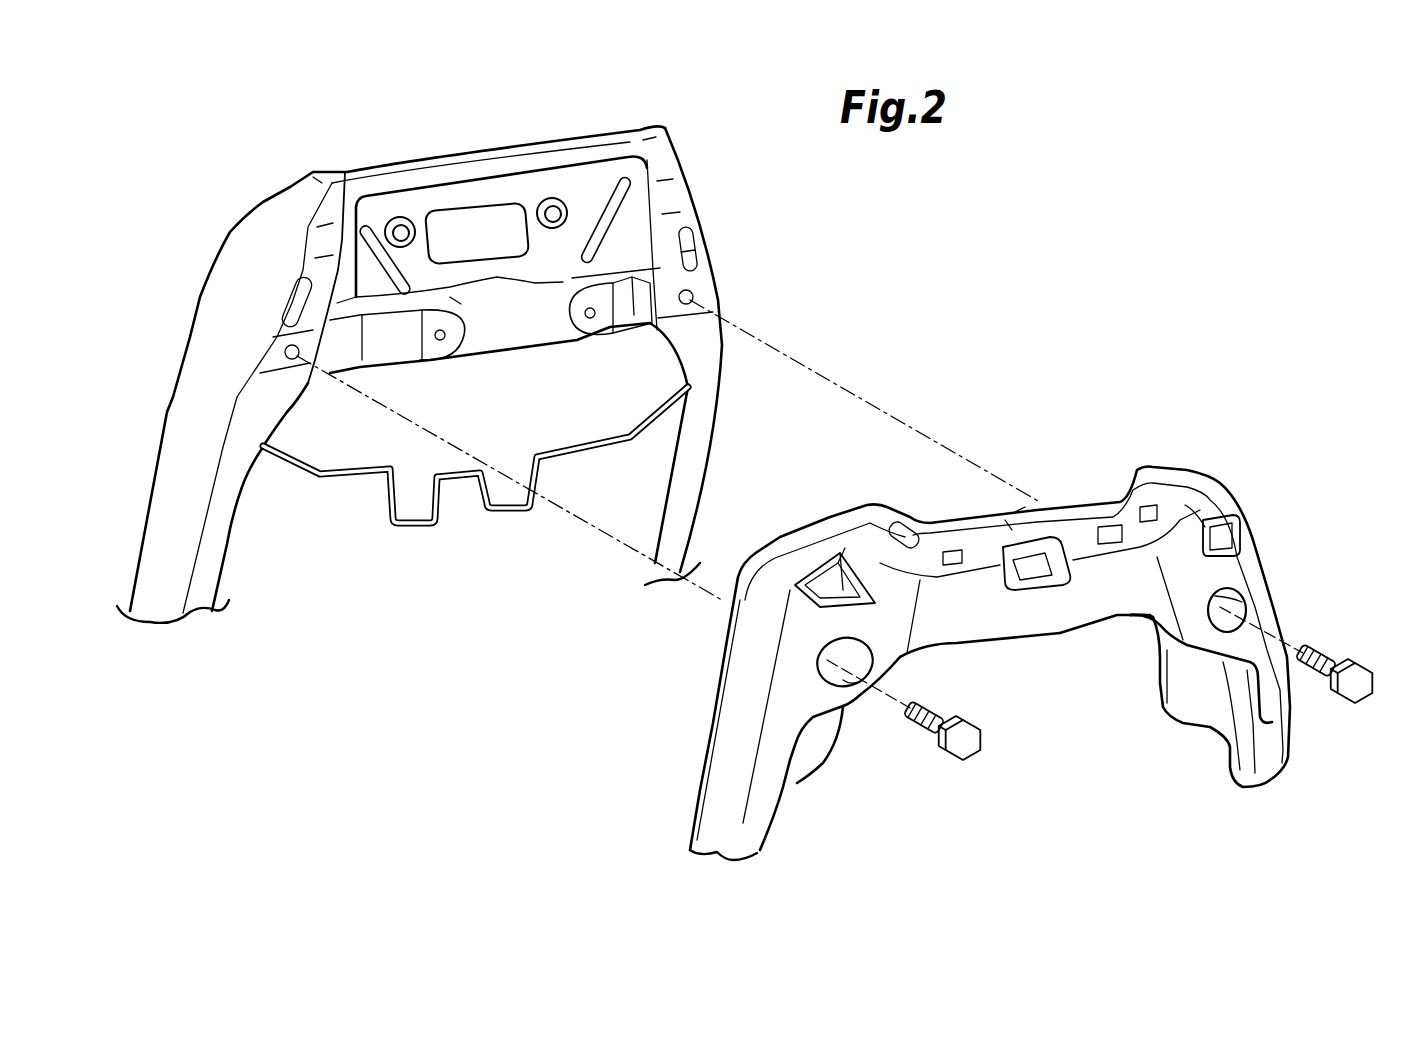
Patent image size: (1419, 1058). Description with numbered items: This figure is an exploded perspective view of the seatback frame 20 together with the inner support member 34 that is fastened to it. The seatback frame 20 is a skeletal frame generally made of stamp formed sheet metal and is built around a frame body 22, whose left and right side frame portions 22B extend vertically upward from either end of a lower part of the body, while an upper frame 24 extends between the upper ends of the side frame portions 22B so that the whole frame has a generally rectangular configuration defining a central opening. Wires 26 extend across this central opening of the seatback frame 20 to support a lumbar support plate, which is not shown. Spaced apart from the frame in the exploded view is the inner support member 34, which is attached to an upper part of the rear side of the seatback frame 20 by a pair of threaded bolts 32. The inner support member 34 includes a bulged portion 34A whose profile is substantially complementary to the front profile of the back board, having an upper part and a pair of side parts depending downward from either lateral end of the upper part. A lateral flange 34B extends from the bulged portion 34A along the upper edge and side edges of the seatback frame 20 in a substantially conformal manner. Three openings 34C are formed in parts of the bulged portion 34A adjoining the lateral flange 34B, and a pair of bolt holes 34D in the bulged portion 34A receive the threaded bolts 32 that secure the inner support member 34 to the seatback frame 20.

The seatback frame 20 is at (722, 243).
The frame body 22 is at (684, 187).
The side frame portions 22B is at (171, 418).
The upper frame 24 is at (532, 170).
The wires 26 is at (508, 518).
The threaded bolts 32 is at (965, 745).
The inner support member 34 is at (1232, 570).
The bulged portion 34A is at (1033, 605).
The lateral flange 34B is at (1078, 520).
The openings 34C is at (832, 575).
The bolt holes 34D is at (848, 687).